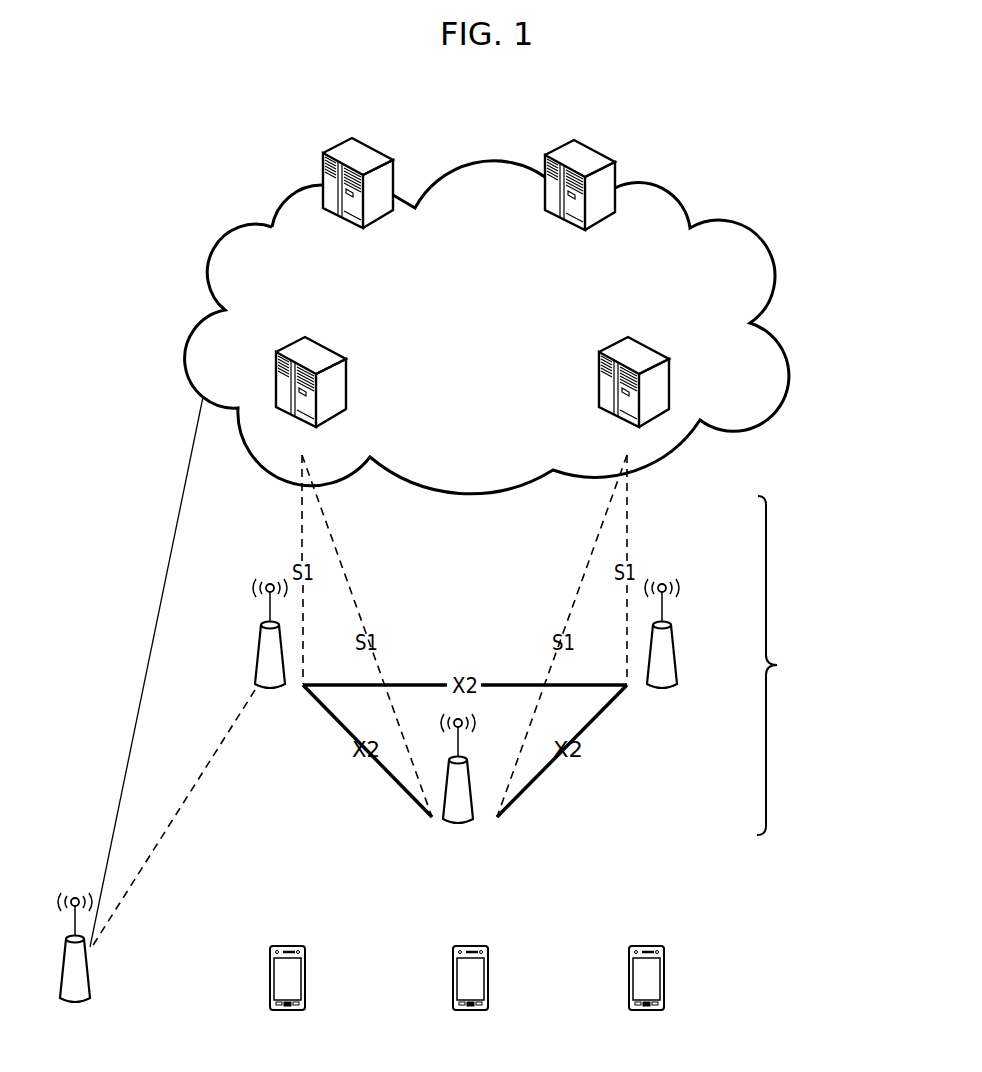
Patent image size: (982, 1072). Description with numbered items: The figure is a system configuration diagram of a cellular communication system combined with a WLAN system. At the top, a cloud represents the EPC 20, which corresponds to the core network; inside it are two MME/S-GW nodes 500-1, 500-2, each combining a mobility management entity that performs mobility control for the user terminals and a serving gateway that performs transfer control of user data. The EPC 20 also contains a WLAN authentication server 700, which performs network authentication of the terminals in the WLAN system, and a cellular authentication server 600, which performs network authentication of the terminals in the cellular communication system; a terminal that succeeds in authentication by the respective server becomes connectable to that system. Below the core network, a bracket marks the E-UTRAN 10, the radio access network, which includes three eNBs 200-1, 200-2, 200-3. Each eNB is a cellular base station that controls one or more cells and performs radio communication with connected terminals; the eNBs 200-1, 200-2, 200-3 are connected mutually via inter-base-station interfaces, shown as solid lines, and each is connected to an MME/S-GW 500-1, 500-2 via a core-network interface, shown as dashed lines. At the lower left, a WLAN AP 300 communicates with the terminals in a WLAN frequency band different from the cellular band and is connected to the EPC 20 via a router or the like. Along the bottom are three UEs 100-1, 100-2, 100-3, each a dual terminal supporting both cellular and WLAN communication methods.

The E-UTRAN 10 is at (807, 665).
The EPC 20 is at (670, 202).
The UE 100-1 is at (290, 946).
The UE 100-2 is at (473, 946).
The UE 100-3 is at (649, 946).
The eNB 200-1 is at (258, 654).
The eNB 200-2 is at (474, 800).
The eNB 200-3 is at (695, 632).
The WLAN AP 300 is at (91, 975).
The MME/S-GW 500-1 is at (330, 350).
The MME/S-GW 500-2 is at (645, 347).
The cellular authentication server 600 is at (587, 143).
The WLAN authentication server 700 is at (350, 138).